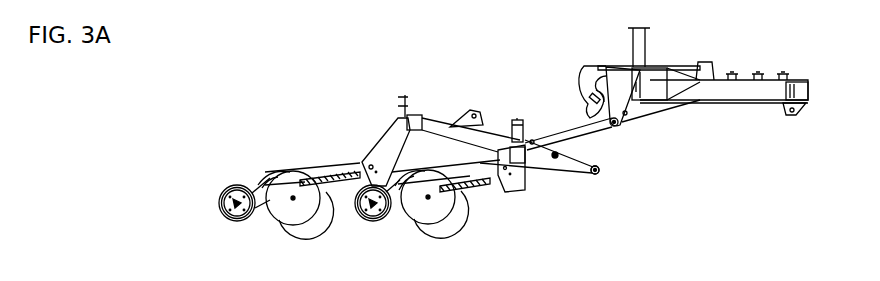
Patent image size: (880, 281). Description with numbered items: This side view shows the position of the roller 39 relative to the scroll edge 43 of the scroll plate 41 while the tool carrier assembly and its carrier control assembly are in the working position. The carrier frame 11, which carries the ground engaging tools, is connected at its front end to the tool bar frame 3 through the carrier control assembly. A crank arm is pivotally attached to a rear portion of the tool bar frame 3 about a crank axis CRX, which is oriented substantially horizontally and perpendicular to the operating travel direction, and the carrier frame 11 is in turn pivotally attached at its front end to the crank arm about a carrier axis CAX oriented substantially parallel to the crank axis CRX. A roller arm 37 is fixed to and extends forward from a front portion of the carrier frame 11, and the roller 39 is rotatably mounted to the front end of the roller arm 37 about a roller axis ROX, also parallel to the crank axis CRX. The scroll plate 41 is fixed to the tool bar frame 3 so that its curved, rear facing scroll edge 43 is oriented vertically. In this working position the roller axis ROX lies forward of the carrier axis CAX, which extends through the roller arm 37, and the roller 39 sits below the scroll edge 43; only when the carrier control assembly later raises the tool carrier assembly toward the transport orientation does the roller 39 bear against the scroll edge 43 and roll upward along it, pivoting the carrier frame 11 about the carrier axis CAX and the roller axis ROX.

The tool bar frame 3 is at (770, 80).
The carrier frame 11 is at (490, 128).
The roller arm 37 is at (580, 176).
The roller 39 is at (600, 173).
The scroll plate 41 is at (590, 65).
The scroll edge 43 is at (572, 120).
The roller axis ROX is at (598, 167).
The carrier axis CAX is at (556, 158).
The crank axis CRX is at (618, 126).